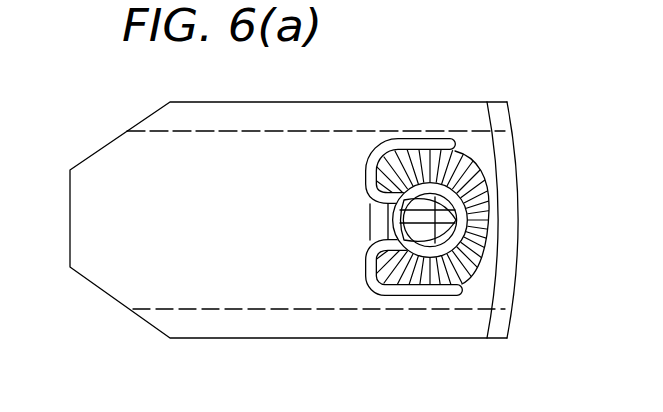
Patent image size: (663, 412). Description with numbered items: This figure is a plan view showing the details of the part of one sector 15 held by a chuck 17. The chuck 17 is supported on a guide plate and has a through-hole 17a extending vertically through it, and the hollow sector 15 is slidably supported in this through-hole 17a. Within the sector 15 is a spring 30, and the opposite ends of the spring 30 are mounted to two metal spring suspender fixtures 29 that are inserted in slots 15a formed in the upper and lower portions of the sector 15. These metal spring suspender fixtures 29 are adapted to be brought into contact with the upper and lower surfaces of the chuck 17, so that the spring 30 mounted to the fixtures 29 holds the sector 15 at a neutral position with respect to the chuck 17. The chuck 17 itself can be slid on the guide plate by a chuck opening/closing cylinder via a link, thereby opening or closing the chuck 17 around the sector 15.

The chuck 17 is at (390, 118).
The through-hole 17a is at (474, 170).
The sector 15 is at (480, 198).
The slot 15a is at (375, 222).
The spring 30 is at (455, 235).
The metal spring suspender fixture 29 is at (433, 297).